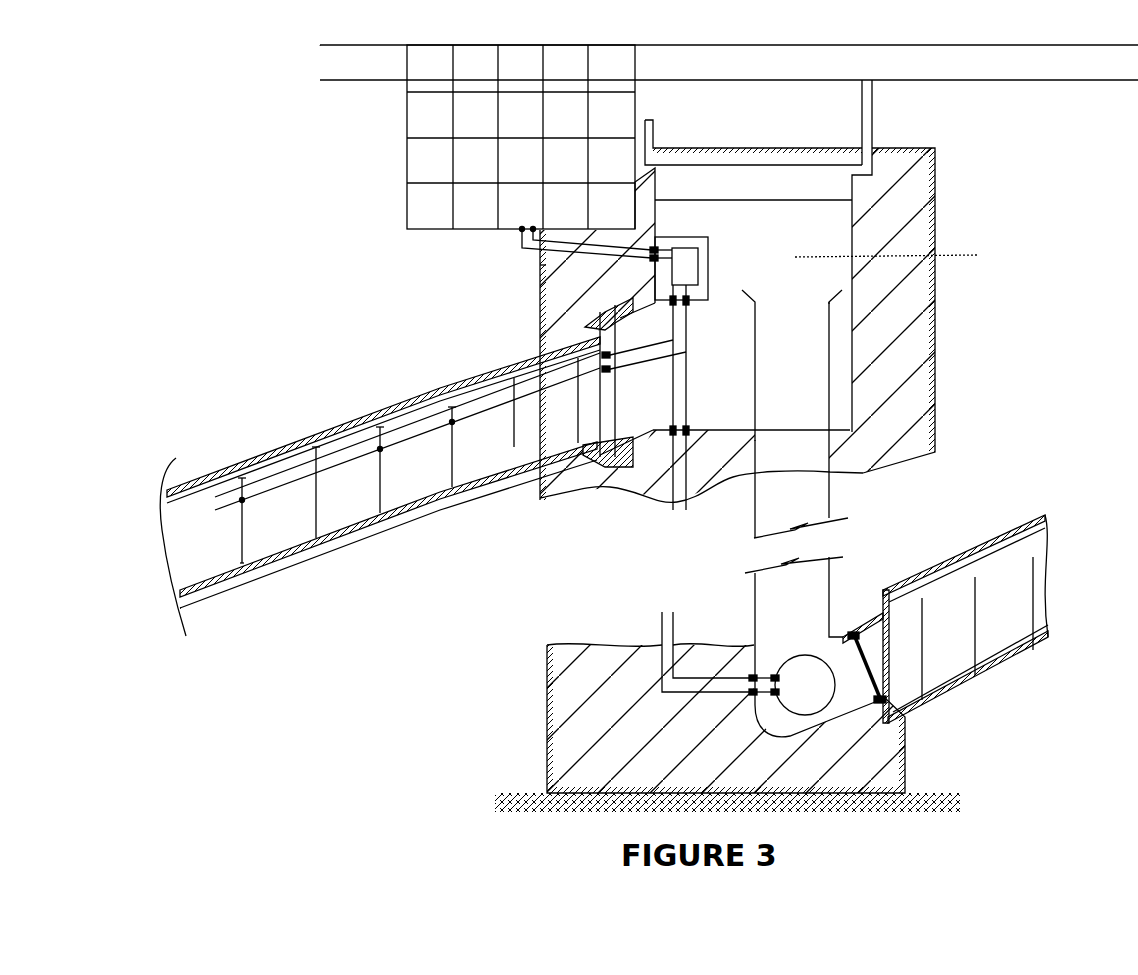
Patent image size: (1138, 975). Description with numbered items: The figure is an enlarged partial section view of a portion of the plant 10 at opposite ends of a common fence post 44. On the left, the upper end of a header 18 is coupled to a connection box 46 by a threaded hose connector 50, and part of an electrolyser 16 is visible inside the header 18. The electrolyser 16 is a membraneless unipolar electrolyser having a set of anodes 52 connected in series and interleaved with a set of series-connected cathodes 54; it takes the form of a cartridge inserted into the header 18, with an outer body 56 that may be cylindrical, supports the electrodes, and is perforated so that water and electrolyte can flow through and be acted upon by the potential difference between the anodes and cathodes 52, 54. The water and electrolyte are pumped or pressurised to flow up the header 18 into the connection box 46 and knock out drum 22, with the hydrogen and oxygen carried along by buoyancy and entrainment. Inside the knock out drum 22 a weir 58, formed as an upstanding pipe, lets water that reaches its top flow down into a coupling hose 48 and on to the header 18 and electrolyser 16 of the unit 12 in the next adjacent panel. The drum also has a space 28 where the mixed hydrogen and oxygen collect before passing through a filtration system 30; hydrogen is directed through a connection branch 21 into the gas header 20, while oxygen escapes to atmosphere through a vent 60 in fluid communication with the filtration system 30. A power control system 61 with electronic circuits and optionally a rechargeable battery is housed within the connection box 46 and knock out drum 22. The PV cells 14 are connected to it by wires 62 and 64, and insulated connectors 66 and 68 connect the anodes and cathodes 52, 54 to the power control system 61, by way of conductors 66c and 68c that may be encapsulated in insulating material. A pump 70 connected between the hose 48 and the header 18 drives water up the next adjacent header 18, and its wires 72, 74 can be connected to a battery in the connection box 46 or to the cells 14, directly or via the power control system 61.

The plant 10 is at (288, 213).
The unit 12 is at (340, 313).
The PV cells 14 is at (402, 142).
The electrolyser 16 is at (265, 565).
The header 18 is at (200, 488).
The gas header 20 is at (997, 81).
The connection branch 21 is at (872, 118).
The knock out drum 22 is at (852, 288).
The space 28 is at (906, 248).
The filtration system 30 is at (830, 187).
The fence post 44 is at (937, 363).
The connection box 46 is at (856, 236).
The coupling hose 48 is at (830, 495).
The threaded hose connector 50 is at (628, 458).
The anodes 52 is at (316, 452).
The cathodes 54 is at (228, 572).
The outer body 56 is at (290, 565).
The weir 58 is at (830, 343).
The vent 60 is at (652, 147).
The power control system 61 is at (708, 242).
The wire 62 is at (530, 263).
The wire 64 is at (545, 270).
The insulated connector 66 is at (675, 340).
The conductor 66c is at (372, 455).
The insulated connector 68 is at (686, 352).
The conductor 68c is at (380, 452).
The pump 70 is at (807, 677).
The wire 72 is at (670, 612).
The wire 74 is at (663, 635).